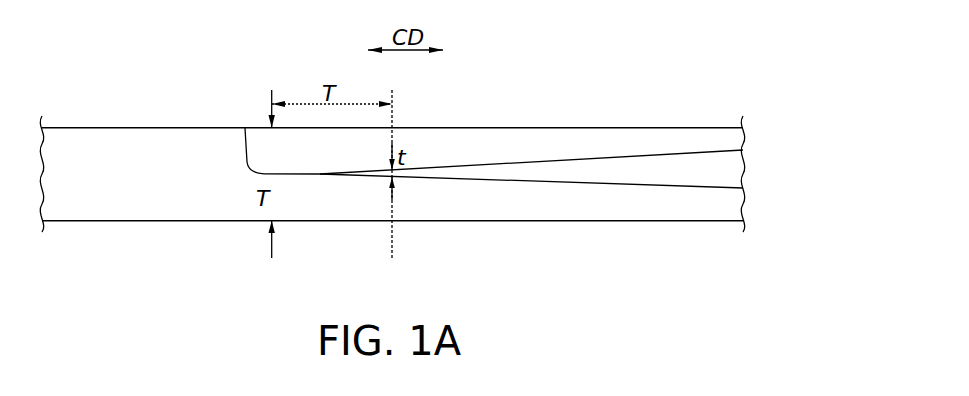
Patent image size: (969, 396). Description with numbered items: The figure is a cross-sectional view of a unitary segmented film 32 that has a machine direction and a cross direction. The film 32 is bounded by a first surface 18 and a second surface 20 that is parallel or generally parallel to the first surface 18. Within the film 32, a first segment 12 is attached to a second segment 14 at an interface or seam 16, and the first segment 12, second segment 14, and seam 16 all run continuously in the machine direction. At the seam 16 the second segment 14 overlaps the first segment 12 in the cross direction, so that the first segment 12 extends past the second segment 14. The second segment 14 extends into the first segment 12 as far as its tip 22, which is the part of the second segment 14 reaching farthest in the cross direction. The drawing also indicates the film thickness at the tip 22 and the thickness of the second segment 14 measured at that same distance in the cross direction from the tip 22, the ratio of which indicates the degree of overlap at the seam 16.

The first segment 12 is at (108, 221).
The second segment 14 is at (672, 154).
The interface or seam 16 is at (523, 182).
The first surface 18 is at (110, 127).
The second surface 20 is at (183, 221).
The tip 22 is at (245, 128).
The unitary segmented film 32 is at (640, 255).